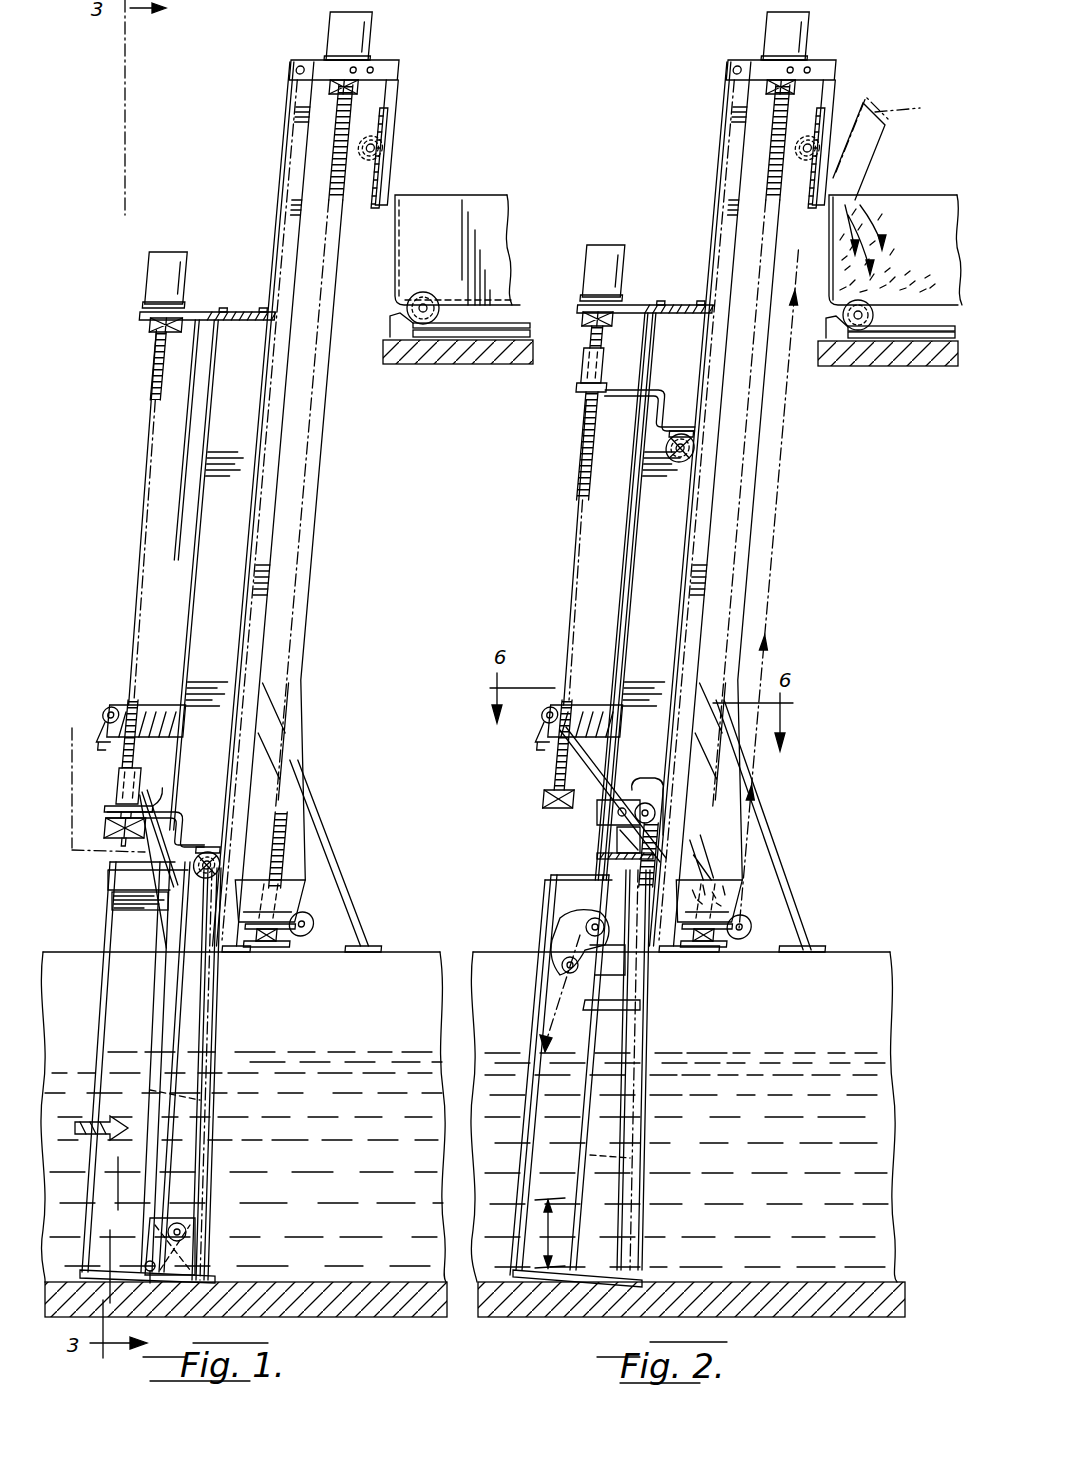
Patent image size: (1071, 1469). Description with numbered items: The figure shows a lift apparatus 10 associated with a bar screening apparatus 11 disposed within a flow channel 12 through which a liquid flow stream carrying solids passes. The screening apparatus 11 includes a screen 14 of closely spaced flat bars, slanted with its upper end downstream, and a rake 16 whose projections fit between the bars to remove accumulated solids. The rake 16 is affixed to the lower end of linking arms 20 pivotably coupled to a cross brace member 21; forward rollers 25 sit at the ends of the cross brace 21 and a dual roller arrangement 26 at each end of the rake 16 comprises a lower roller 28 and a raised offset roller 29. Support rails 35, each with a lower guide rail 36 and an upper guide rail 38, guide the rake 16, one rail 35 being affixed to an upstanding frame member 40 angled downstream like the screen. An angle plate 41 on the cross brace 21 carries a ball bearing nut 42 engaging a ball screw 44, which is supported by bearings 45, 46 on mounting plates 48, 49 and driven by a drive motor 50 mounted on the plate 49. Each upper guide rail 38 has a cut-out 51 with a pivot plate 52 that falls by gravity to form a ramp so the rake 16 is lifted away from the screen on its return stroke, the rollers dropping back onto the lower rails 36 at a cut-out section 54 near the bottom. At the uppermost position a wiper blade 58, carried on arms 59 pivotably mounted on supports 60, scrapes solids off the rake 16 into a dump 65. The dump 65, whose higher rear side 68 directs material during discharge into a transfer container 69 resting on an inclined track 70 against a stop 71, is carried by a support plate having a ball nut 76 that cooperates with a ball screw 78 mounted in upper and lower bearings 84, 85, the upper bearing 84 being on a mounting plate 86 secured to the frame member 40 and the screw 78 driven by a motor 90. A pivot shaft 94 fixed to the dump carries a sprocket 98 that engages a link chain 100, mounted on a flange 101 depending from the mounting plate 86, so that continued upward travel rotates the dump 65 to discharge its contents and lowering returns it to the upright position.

In FIG. 1, the lift apparatus 10 is at (260, 98).
In FIG. 2, the lift apparatus 10 is at (697, 140).
In FIG. 1, the bar screening apparatus 11 is at (134, 429).
In FIG. 2, the bar screening apparatus 11 is at (558, 490).
In FIG. 1, the flow channel 12 is at (390, 1028).
In FIG. 2, the flow channel 12 is at (835, 1031).
In FIG. 1, the screen 14 is at (215, 1035).
In FIG. 2, the screen 14 is at (650, 1110).
In FIG. 1, the rake 16 is at (185, 1262).
In FIG. 2, the rake 16 is at (640, 1015).
In FIG. 1, the linking arms 20 is at (180, 1003).
In FIG. 2, the linking arms 20 is at (648, 528).
In FIG. 1, the cross brace member 21 is at (213, 860).
In FIG. 2, the cross brace member 21 is at (665, 462).
In FIG. 1, the forward rollers 25 is at (219, 872).
In FIG. 2, the forward rollers 25 is at (662, 452).
In FIG. 1, the dual roller arrangement 26 is at (150, 1285).
In FIG. 2, the dual roller arrangement 26 is at (612, 766).
In FIG. 1, the lower roller 28 is at (190, 1236).
In FIG. 2, the lower roller 28 is at (660, 815).
In FIG. 1, the roller 29 is at (130, 1256).
In FIG. 2, the roller 29 is at (597, 856).
In FIG. 1, the support rails 35 is at (105, 1035).
In FIG. 2, the support rails 35 is at (530, 1008).
In FIG. 1, the lower guide rail 36 is at (150, 1090).
In FIG. 2, the lower guide rail 36 is at (590, 1155).
In FIG. 1, the upper guide rail 38 is at (150, 1040).
In FIG. 2, the upper guide rail 38 is at (580, 1110).
In FIG. 1, the frame member 40 is at (290, 182).
In FIG. 2, the frame member 40 is at (713, 230).
In FIG. 1, the angle plate 41 is at (172, 820).
In FIG. 2, the angle plate 41 is at (648, 410).
In FIG. 1, the ball bearing nut 42 is at (123, 785).
In FIG. 2, the ball bearing nut 42 is at (610, 380).
In FIG. 1, the ball screw 44 is at (143, 487).
In FIG. 2, the ball screw 44 is at (568, 540).
In FIG. 1, the bearing 45 is at (110, 838).
In FIG. 2, the bearing 45 is at (540, 842).
In FIG. 1, the bearing 46 is at (148, 322).
In FIG. 2, the bearing 46 is at (612, 330).
In FIG. 1, the mounting plate 48 is at (150, 800).
In FIG. 2, the mounting plate 48 is at (597, 812).
In FIG. 1, the mounting plate 49 is at (210, 312).
In FIG. 2, the mounting plate 49 is at (640, 310).
In FIG. 1, the drive motor 50 is at (150, 258).
In FIG. 2, the drive motor 50 is at (600, 252).
In FIG. 1, the cut-out 51 is at (175, 905).
In FIG. 2, the cut-out 51 is at (565, 905).
In FIG. 1, the pivot plate 52 is at (180, 921).
In FIG. 2, the pivot plate 52 is at (620, 958).
In FIG. 1, the cut-out section 54 is at (150, 1200).
In FIG. 2, the cut-out section 54 is at (558, 1240).
In FIG. 1, the wiper blade 58 is at (185, 840).
In FIG. 2, the wiper blade 58 is at (642, 842).
In FIG. 1, the arms 59 is at (112, 718).
In FIG. 2, the arms 59 is at (565, 786).
In FIG. 1, the supports 60 is at (157, 705).
In FIG. 2, the supports 60 is at (600, 705).
In FIG. 1, the dump 65 is at (258, 886).
In FIG. 2, the dump 65 is at (742, 890).
In FIG. 1, the rear side 68 is at (302, 898).
In FIG. 1, the transfer container 69 is at (455, 205).
In FIG. 2, the transfer container 69 is at (905, 205).
In FIG. 1, the inclined track 70 is at (458, 300).
In FIG. 2, the inclined track 70 is at (880, 330).
In FIG. 1, the stop 71 is at (390, 330).
In FIG. 2, the stop 71 is at (826, 332).
In FIG. 2, the ball nut 76 is at (745, 905).
In FIG. 1, the ball screw 78 is at (328, 450).
In FIG. 2, the ball screw 78 is at (770, 442).
In FIG. 1, the upper bearing 84 is at (380, 90).
In FIG. 2, the upper bearing 84 is at (740, 88).
In FIG. 1, the lower bearing 85 is at (272, 946).
In FIG. 2, the lower bearing 85 is at (700, 950).
In FIG. 1, the mounting plate 86 is at (318, 66).
In FIG. 2, the mounting plate 86 is at (745, 66).
In FIG. 1, the motor 90 is at (372, 28).
In FIG. 2, the motor 90 is at (808, 32).
In FIG. 1, the pivot shaft 94 is at (322, 930).
In FIG. 2, the pivot shaft 94 is at (755, 925).
In FIG. 1, the sprocket 98 is at (306, 920).
In FIG. 2, the sprocket 98 is at (745, 945).
In FIG. 1, the link chain 100 is at (378, 148).
In FIG. 2, the link chain 100 is at (807, 148).
In FIG. 1, the flange 101 is at (398, 122).
In FIG. 2, the flange 101 is at (838, 95).